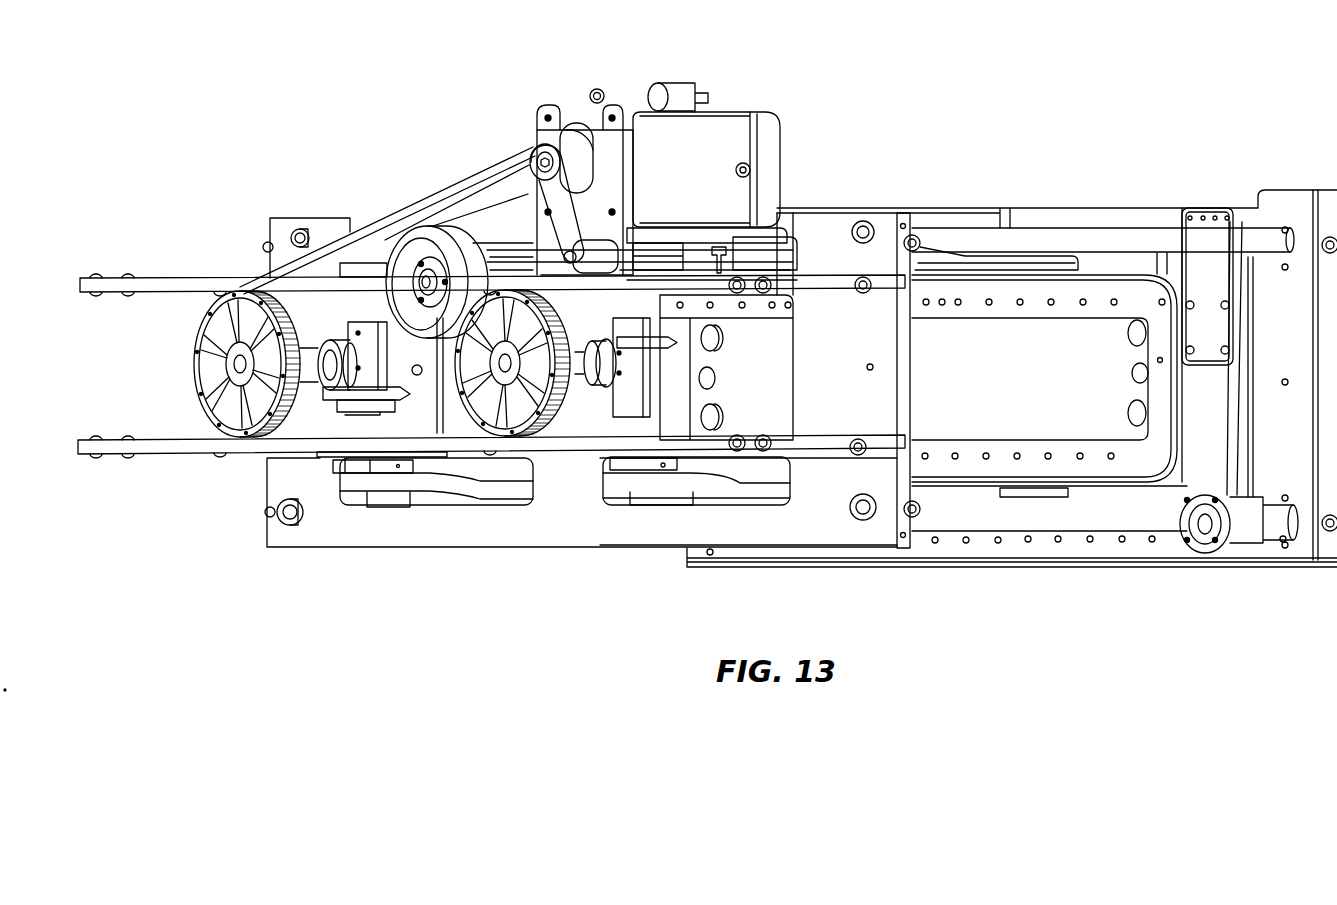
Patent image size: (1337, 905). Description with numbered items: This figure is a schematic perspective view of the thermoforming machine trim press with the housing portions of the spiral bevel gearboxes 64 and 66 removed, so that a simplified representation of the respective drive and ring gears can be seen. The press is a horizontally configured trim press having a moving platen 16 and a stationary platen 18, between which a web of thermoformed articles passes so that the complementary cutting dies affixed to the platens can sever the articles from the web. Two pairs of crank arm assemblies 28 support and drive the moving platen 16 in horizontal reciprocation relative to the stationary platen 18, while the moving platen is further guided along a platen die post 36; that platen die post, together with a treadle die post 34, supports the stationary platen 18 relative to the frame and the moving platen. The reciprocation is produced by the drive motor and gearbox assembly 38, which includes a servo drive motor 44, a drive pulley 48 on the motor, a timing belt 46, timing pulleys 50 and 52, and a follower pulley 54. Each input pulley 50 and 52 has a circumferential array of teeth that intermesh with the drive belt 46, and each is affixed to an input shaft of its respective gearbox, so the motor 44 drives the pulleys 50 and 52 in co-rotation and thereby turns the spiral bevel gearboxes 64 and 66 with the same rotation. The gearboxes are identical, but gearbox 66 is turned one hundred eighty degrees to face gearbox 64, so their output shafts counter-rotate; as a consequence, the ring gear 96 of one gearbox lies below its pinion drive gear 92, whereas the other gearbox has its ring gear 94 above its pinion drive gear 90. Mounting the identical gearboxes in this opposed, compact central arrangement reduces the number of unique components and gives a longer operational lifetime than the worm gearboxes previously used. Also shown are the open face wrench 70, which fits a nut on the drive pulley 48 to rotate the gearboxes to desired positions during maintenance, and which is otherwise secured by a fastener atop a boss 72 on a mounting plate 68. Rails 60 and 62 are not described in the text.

The moving platen 16 is at (1140, 462).
The stationary platen 18 is at (1130, 208).
The crank arm assemblies 28 is at (961, 247).
The treadle die post 34 is at (1018, 230).
The platen die post 36 is at (1010, 518).
The drive motor and gearbox assembly 38 is at (388, 86).
The servo drive motor 44 is at (683, 163).
The timing belt 46 is at (437, 192).
The drive pulley 48 is at (533, 152).
The timing pulley 50 is at (522, 400).
The timing pulley 52 is at (193, 407).
The follower pulley 54 is at (462, 238).
The upper rail 60 is at (167, 278).
The lower rail 62 is at (150, 460).
The spiral bevel gearbox 64 is at (692, 362).
The spiral bevel gearbox 66 is at (412, 420).
The mounting plate 68 is at (610, 142).
The open face wrench 70 is at (507, 213).
The boss 72 is at (607, 254).
The pinion drive gear 90 is at (596, 387).
The pinion drive gear 92 is at (347, 340).
The ring gear 94 is at (672, 345).
The ring gear 96 is at (373, 412).